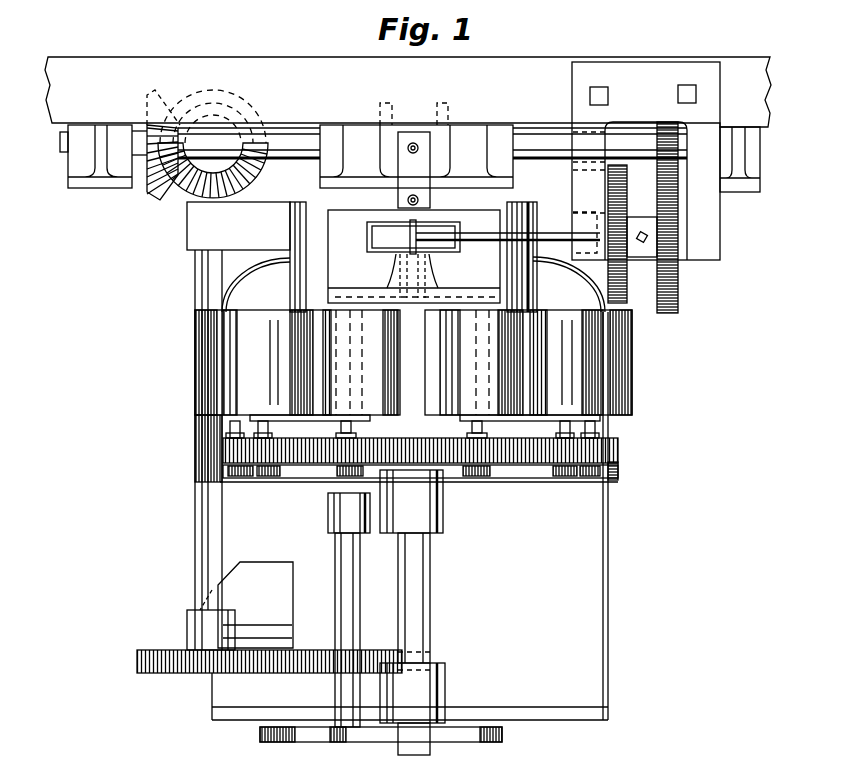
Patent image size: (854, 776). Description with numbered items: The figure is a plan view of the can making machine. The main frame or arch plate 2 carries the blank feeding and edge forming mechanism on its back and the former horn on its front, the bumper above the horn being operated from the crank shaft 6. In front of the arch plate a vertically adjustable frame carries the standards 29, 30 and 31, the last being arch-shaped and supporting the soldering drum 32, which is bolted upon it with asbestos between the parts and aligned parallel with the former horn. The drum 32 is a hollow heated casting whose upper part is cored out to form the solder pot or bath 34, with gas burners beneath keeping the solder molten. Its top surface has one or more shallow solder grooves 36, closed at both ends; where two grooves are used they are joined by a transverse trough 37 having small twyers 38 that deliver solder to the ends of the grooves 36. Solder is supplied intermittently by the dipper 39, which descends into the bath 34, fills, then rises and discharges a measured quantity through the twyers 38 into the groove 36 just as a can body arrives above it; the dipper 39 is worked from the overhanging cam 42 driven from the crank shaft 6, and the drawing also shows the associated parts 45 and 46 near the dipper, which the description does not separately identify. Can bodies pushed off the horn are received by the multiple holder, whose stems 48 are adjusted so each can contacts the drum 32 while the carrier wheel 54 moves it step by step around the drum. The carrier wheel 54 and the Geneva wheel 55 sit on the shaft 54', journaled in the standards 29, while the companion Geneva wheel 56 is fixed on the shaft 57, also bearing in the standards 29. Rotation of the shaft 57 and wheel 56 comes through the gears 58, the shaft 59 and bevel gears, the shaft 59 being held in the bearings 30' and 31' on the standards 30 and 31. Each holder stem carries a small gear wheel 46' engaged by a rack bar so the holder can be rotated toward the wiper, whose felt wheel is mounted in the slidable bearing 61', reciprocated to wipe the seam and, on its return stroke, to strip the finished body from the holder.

The main frame or arch plate 2 is at (408, 92).
The crank shaft 6 is at (300, 136).
The standards 29 is at (338, 521).
The standard 30 is at (255, 605).
The bearing 30' is at (192, 620).
The standard 31 is at (238, 226).
The bearing 31' is at (208, 265).
The soldering drum 32 is at (295, 219).
The solder pot or bath 34 is at (445, 300).
The solder groove 36 is at (345, 300).
The transverse trough 37 is at (383, 300).
The twyers 38 is at (478, 305).
The dipper 39 is at (367, 232).
The overhanging cam 42 is at (617, 290).
The slide 45 is at (410, 233).
The shaft 46 is at (508, 212).
The small gear wheel 46' is at (576, 489).
The stems 48 is at (472, 440).
The carrier wheel 54 is at (419, 451).
The shaft 54' is at (425, 601).
The Geneva wheel 55 is at (477, 742).
The Geneva wheel 56 is at (320, 742).
The shaft 57 is at (340, 440).
The gears 58 is at (247, 672).
The shaft 59 is at (200, 506).
The slidable bearing 61' is at (630, 471).